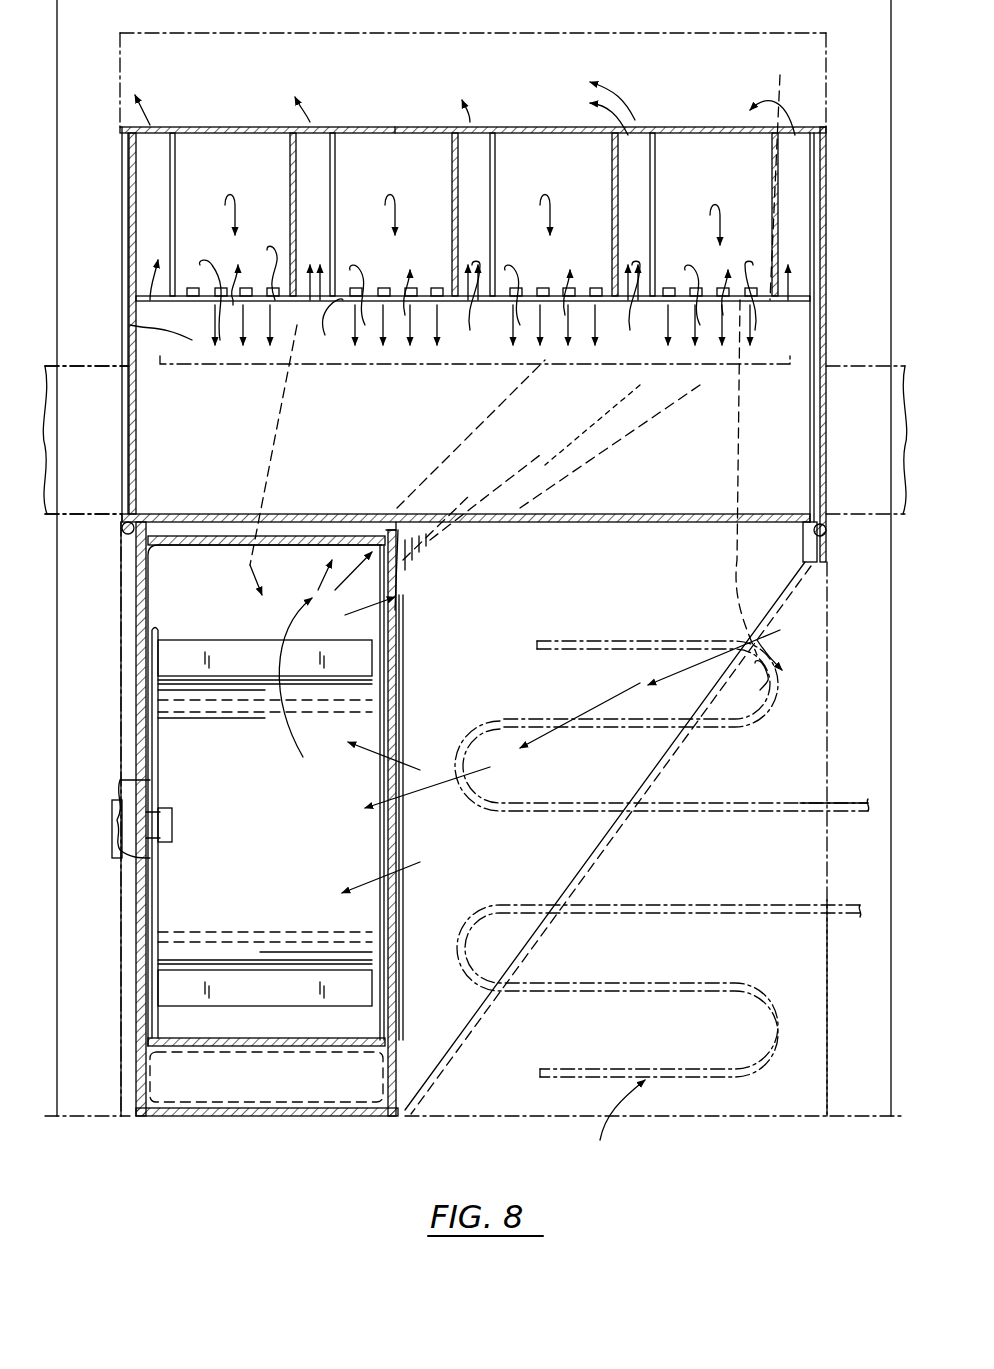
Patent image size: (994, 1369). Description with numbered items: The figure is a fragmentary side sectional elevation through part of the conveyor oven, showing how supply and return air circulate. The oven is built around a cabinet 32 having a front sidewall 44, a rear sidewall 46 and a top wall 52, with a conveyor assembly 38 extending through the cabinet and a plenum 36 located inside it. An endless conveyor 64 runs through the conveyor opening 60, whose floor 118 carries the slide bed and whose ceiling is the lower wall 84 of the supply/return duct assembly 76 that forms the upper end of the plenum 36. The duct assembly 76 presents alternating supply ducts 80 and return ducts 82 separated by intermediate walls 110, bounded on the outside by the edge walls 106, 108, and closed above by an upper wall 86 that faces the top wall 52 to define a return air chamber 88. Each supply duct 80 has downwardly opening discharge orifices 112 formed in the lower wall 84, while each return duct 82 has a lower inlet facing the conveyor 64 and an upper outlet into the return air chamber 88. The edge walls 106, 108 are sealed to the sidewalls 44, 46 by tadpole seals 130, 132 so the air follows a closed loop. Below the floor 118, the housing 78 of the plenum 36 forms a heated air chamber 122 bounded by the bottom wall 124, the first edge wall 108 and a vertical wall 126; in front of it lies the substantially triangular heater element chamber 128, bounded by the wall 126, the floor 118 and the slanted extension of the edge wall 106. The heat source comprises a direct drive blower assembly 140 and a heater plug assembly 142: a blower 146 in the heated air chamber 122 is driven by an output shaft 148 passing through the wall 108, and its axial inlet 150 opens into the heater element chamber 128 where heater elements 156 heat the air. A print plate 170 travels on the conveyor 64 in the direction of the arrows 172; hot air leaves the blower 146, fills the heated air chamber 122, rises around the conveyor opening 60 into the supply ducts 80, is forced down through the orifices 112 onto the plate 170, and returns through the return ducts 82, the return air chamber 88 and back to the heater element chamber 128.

The cabinet 32 is at (57, 1095).
The plenum 36 is at (820, 556).
The conveyor assembly 38 is at (70, 515).
The front sidewall 44 is at (830, 1093).
The rear sidewall 46 is at (135, 990).
The top wall 52 is at (718, 38).
The conveyor opening 60 is at (459, 300).
The endless conveyor 64 is at (80, 365).
The supply/return duct assembly 76 is at (392, 127).
The housing 78 is at (430, 1078).
The supply ducts 80 is at (472, 208).
The return ducts 82 is at (303, 150).
The lower wall 84 is at (810, 300).
The upper wall 86 is at (217, 127).
The return air chamber 88 is at (385, 88).
The second edge wall 106 is at (815, 264).
The first edge wall 108 is at (133, 210).
The intermediate walls 110 is at (298, 170).
The discharge orifices 112 is at (190, 293).
The floor 118 is at (560, 522).
The heated air chamber 122 is at (266, 791).
The bottom wall 124 is at (285, 1115).
The vertical wall 126 is at (398, 607).
The heater element chamber 128 is at (655, 873).
The tadpole seal 130 is at (823, 205).
The tadpole seal 132 is at (133, 237).
The direct drive blower assembly 140 is at (133, 624).
The heater plug assembly 142 is at (617, 1122).
The blower 146 is at (152, 658).
The output shaft 148 is at (125, 870).
The axial inlet 150 is at (397, 862).
The heater elements 156 is at (760, 905).
The print plate 170 is at (160, 353).
The arrows 172 is at (865, 345).